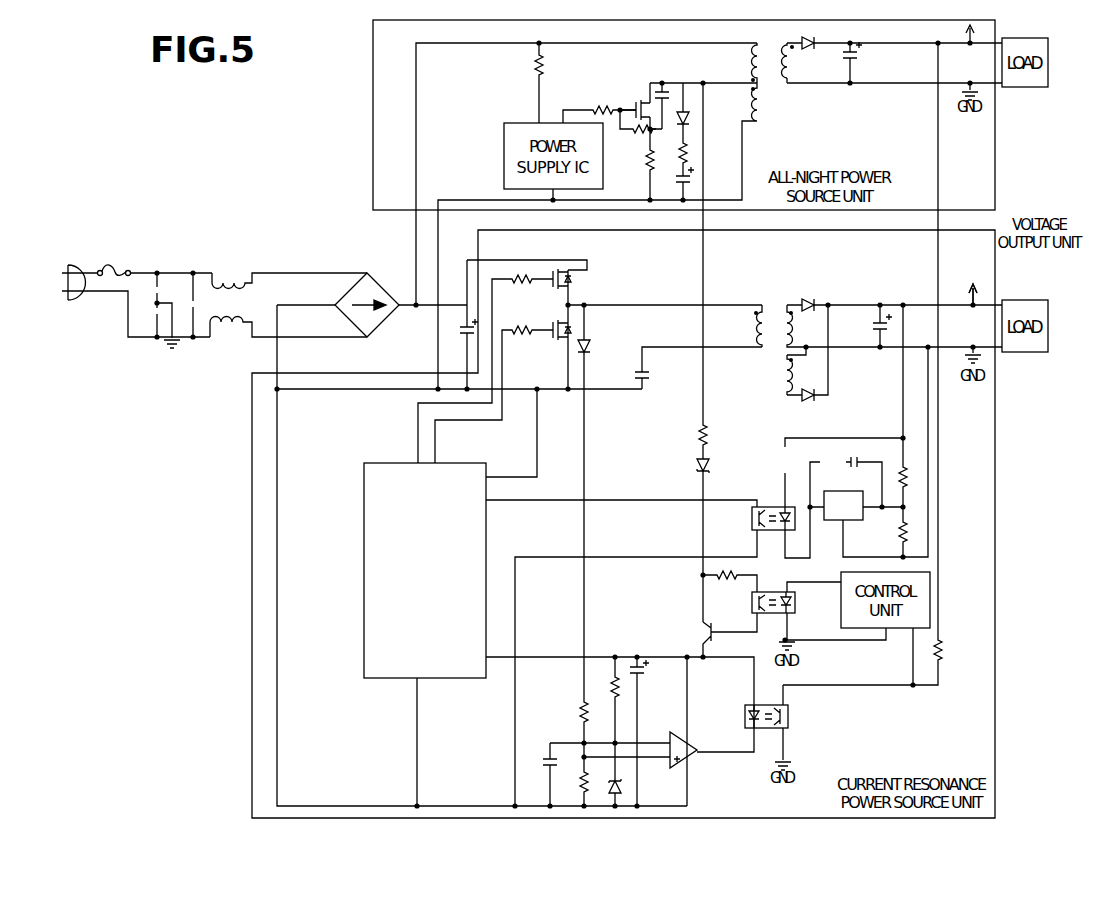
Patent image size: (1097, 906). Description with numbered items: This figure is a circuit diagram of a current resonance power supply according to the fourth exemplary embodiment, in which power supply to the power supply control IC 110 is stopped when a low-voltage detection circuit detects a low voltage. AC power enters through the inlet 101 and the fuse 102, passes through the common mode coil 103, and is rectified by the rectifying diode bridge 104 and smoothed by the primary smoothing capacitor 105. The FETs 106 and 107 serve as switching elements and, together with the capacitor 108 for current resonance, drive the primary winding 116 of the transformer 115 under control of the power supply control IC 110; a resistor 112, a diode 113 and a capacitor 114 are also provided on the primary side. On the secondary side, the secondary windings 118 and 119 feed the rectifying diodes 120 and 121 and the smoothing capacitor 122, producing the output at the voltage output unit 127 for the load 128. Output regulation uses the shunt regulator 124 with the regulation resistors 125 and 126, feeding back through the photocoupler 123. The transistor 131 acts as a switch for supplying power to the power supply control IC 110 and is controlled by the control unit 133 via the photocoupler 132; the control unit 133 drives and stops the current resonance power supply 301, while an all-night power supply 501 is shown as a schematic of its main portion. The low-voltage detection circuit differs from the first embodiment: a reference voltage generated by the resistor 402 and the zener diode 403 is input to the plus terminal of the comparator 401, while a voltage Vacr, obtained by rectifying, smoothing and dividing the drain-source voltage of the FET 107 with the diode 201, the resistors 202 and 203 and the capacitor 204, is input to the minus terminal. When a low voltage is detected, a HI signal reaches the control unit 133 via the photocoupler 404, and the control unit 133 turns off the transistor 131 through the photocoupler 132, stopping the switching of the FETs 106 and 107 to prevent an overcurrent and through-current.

The inlet 101 is at (80, 262).
The fuse 102 is at (116, 266).
The common mode coil 103 is at (226, 280).
The rectifying diode bridge 104 is at (380, 272).
The primary smoothing capacitor 105 is at (458, 345).
The FET 106 is at (559, 268).
The FET 107 is at (555, 342).
The capacitor for current resonance 108 is at (638, 386).
The power supply control IC 110 is at (455, 680).
The resistor 112 is at (696, 436).
The diode 113 is at (696, 465).
The capacitor 114 is at (644, 671).
The transformer 115 is at (856, 336).
The primary winding 116 is at (752, 330).
The secondary winding 118 is at (800, 340).
The secondary winding 119 is at (778, 378).
The rectifying diode 120 is at (814, 298).
The rectifying diode 121 is at (818, 400).
The smoothing capacitor 122 is at (872, 343).
The photocoupler 123 is at (766, 506).
The shunt regulator 124 is at (850, 522).
The regulation resistor 125 is at (912, 482).
The regulation resistor 126 is at (912, 534).
The voltage output unit 127 is at (978, 292).
The load 128 is at (1029, 346).
The transistor 131 is at (702, 633).
The photocoupler 132 is at (796, 606).
The control unit 133 is at (936, 636).
The diode 201 is at (590, 348).
The resistor 202 is at (581, 708).
The resistor 203 is at (580, 757).
The capacitor 204 is at (545, 766).
The current resonance power supply 301 is at (995, 604).
The comparator 401 is at (668, 737).
The resistor 402 is at (610, 675).
The zener diode 403 is at (623, 788).
The photocoupler 404 is at (788, 722).
The all-night power supply 501 is at (995, 134).